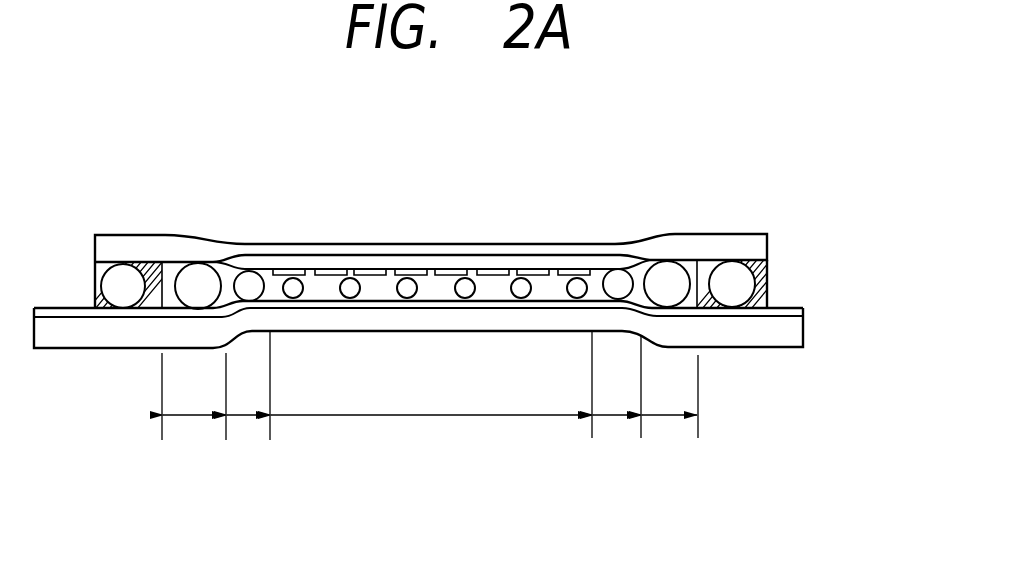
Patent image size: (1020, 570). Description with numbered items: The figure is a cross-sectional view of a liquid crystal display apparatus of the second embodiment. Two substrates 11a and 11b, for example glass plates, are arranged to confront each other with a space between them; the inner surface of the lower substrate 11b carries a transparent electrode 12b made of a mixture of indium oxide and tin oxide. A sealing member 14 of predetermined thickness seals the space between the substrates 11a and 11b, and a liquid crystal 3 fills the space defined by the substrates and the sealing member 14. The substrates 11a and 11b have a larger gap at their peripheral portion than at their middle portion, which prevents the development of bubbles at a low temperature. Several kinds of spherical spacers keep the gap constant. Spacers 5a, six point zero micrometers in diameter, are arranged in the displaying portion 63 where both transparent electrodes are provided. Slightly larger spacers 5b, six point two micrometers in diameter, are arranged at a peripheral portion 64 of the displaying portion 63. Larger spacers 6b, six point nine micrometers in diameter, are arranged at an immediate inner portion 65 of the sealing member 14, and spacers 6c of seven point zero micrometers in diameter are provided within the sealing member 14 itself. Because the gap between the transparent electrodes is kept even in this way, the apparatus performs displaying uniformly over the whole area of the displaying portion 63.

The liquid crystal 3 is at (436, 294).
The spacers 5a is at (407, 283).
The spacers 5b is at (252, 283).
The spacers 6b is at (195, 285).
The spacers 6c is at (732, 272).
The substrate 11a is at (767, 238).
The substrate 11b is at (795, 332).
The transparent electrode 12b is at (803, 310).
The sealing member 14 is at (767, 276).
The displaying portion 63 is at (423, 415).
The peripheral portion 64 is at (247, 415).
The immediate inner portion 65 is at (193, 415).